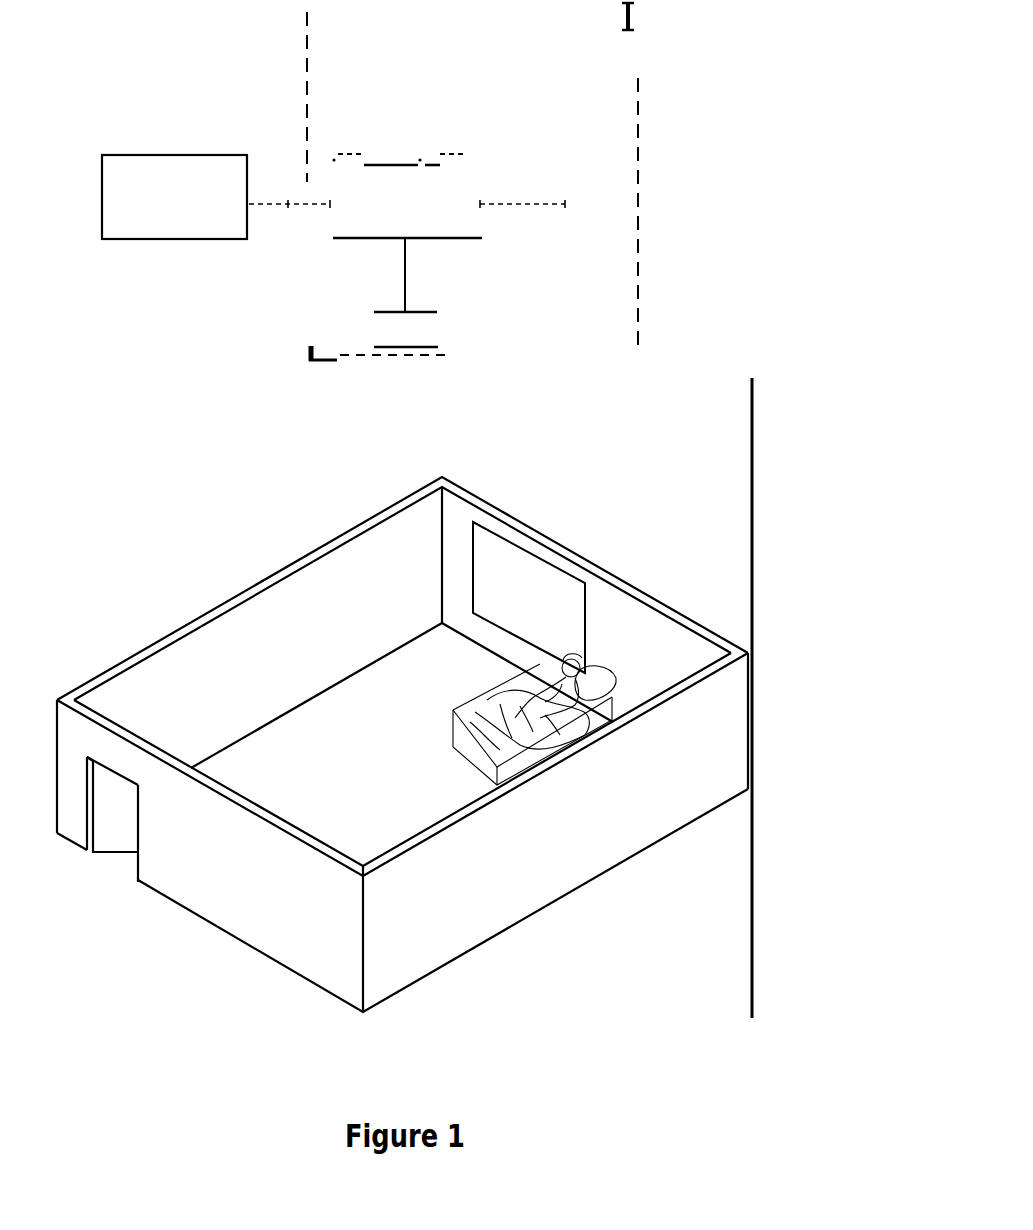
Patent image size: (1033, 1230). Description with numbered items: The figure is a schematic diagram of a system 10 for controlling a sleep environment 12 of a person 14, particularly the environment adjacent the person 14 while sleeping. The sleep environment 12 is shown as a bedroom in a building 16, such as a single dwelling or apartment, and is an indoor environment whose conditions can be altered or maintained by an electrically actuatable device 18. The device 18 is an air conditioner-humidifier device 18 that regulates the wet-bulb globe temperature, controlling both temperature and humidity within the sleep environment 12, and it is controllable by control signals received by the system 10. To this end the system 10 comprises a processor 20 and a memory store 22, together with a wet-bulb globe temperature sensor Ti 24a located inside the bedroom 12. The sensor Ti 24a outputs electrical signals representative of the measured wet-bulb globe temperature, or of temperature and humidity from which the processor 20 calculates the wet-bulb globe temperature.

The system 10 is at (655, 47).
The sleep environment 12 is at (371, 712).
The person 14 is at (577, 662).
The building 16 is at (784, 698).
The air conditioner-humidifier device 18 is at (216, 157).
The processor 20 is at (448, 236).
The memory store 22 is at (662, 214).
The wet-bulb globe temperature sensor Ti 24a is at (530, 589).